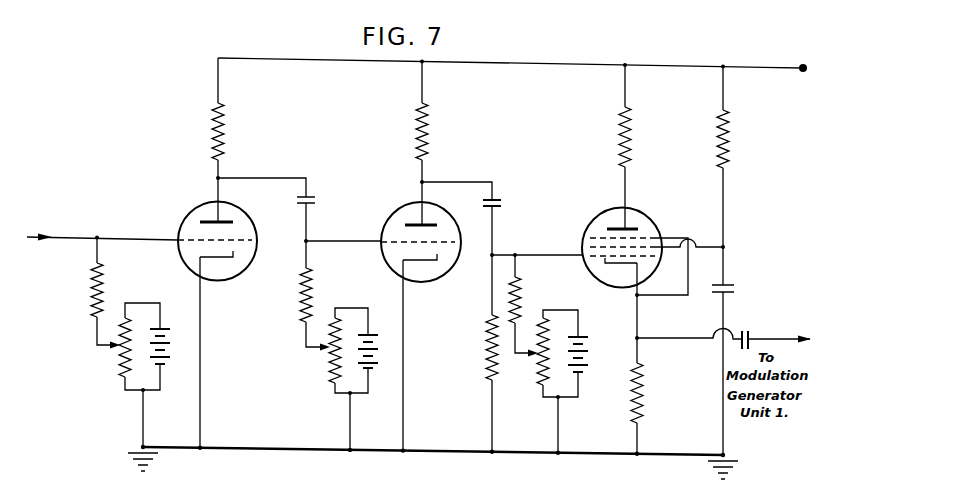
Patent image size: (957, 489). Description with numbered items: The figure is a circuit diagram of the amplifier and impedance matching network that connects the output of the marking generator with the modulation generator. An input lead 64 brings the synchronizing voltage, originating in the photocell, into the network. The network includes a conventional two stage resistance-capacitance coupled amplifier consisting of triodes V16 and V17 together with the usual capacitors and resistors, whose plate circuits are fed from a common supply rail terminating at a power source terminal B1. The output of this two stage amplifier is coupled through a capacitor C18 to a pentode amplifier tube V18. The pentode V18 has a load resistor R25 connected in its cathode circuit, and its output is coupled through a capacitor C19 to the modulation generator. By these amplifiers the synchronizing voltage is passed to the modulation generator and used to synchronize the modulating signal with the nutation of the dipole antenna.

The input signal lead 64 is at (75, 238).
The triode V16 is at (225, 240).
The triode V17 is at (426, 242).
The pentode amplifier tube V18 is at (627, 246).
The capacitor C18 is at (506, 200).
The capacitor C19 is at (754, 333).
The load resistor R25 is at (650, 393).
The power source terminal B1 is at (778, 60).